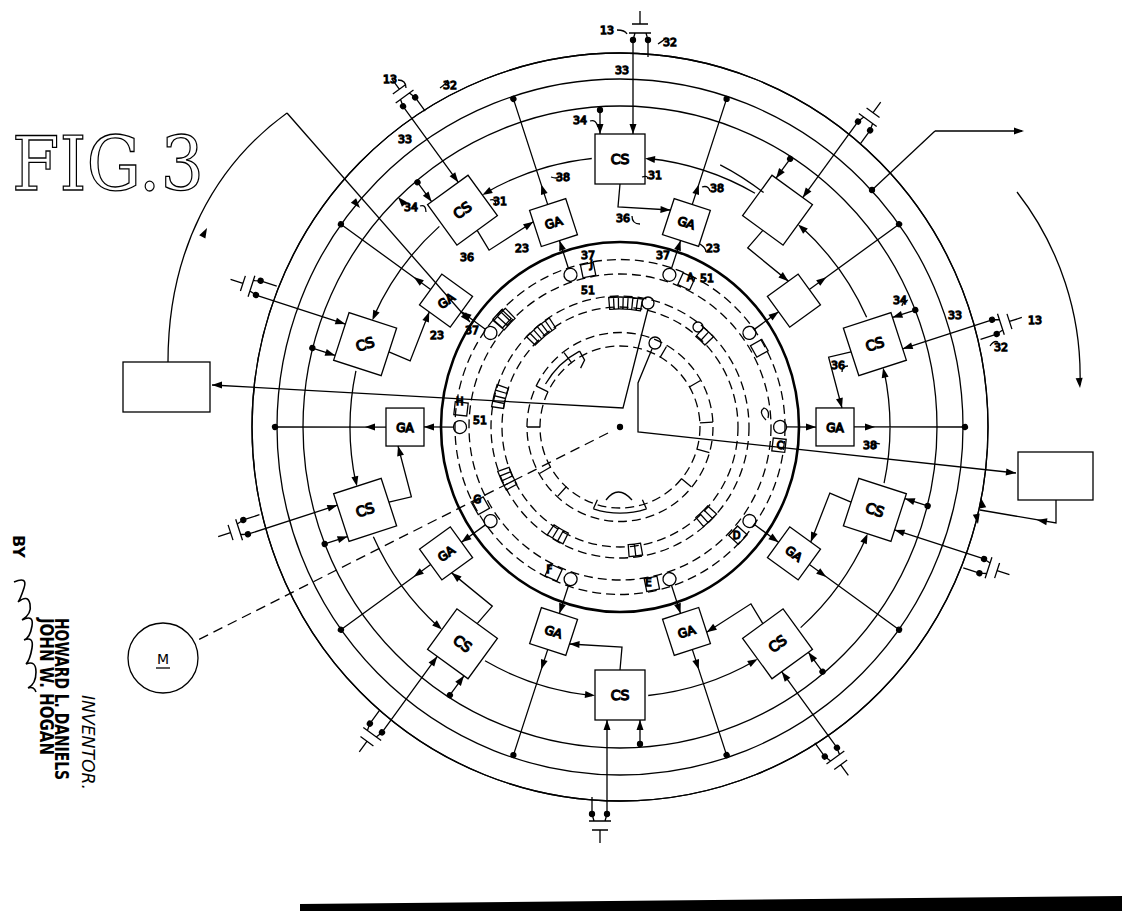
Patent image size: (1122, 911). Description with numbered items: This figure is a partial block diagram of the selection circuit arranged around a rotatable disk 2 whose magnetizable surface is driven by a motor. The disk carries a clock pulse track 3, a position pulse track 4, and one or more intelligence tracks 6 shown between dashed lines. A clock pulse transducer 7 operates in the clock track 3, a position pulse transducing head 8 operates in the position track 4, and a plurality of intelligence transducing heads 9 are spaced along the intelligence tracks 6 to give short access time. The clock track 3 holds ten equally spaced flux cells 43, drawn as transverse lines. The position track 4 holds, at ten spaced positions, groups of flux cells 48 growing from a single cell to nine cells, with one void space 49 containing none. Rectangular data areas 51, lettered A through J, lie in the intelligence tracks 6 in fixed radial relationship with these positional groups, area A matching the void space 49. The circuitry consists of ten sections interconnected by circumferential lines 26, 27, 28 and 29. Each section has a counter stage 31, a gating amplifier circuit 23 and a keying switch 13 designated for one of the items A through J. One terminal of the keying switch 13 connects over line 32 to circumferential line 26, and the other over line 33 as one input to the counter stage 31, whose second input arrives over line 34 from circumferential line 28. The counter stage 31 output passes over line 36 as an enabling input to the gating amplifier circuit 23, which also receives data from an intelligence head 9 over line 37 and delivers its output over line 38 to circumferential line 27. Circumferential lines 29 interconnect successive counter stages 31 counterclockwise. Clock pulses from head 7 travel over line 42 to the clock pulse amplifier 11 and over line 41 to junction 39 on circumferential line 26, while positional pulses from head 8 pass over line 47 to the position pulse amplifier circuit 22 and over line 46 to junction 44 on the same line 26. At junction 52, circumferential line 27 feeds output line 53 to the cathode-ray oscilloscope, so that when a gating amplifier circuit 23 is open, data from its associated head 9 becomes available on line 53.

The rotatable disk 2 is at (386, 136).
The clock pulse track 3 is at (678, 363).
The position pulse track 4 is at (707, 328).
The intelligence track 6 is at (522, 310).
The clock pulse transducer 7 is at (660, 337).
The position pulse transducing head 8 is at (651, 297).
The intelligence transducing head 9 is at (768, 412).
The clock pulse amplifier 11 is at (1093, 472).
The keying switch 13 is at (850, 110).
The position pulse amplifier circuit 22 is at (178, 412).
The gating amplifier circuit 23 is at (792, 332).
The circumferential line 26 is at (792, 86).
The circumferential line 27 is at (788, 111).
The circumferential line 28 is at (780, 135).
The circumferential lines 29 is at (754, 175).
The counter stage 31 is at (790, 236).
The line 32 is at (868, 132).
The line 33 is at (881, 219).
The line 34 is at (792, 158).
The line 36 is at (740, 264).
The line 37 is at (752, 326).
The line 38 is at (826, 275).
The junction 39 is at (984, 512).
The line 41 is at (1056, 523).
The line 42 is at (673, 436).
The flux cells 43 is at (571, 372).
The junction 44 is at (380, 228).
The line 46 is at (320, 142).
The line 47 is at (589, 409).
The flux cells 48 is at (556, 334).
The void space 49 is at (623, 312).
The data area 51 is at (701, 270).
The junction 52 is at (875, 192).
The output line 53 is at (992, 130).